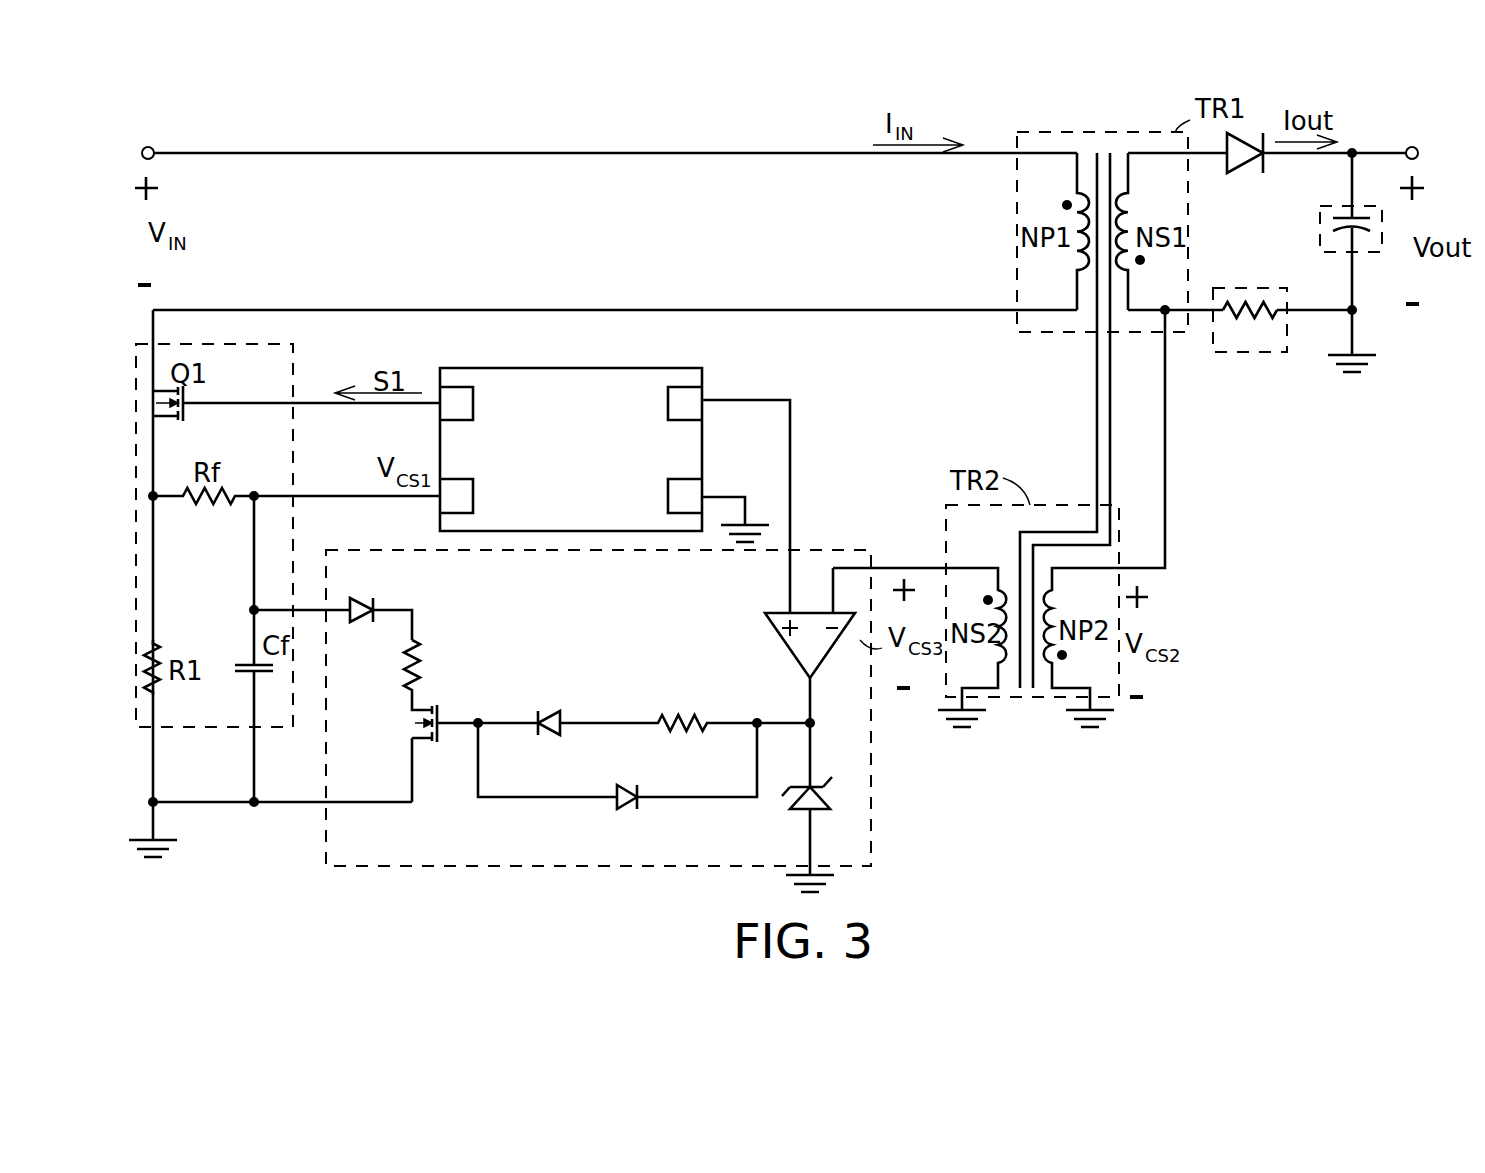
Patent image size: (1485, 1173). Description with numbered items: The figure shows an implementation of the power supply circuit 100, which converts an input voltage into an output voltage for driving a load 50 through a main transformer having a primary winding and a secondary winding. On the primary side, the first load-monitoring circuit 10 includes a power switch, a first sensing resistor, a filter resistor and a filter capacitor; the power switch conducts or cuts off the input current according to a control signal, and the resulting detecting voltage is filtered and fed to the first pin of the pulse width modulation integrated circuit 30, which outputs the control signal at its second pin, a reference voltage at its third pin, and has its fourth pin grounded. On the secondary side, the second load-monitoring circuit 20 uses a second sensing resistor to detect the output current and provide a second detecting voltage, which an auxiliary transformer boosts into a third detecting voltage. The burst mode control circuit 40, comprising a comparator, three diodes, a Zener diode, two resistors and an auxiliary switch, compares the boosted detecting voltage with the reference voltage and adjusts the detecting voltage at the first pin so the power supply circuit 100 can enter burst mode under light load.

The first load-monitoring circuit 10 is at (135, 413).
The second load-monitoring circuit 20 is at (1248, 353).
The pulse width modulation integrated circuit 30 is at (675, 368).
The burst mode control circuit 40 is at (871, 831).
The load 50 is at (1320, 245).
The power supply circuit 100 is at (1290, 760).